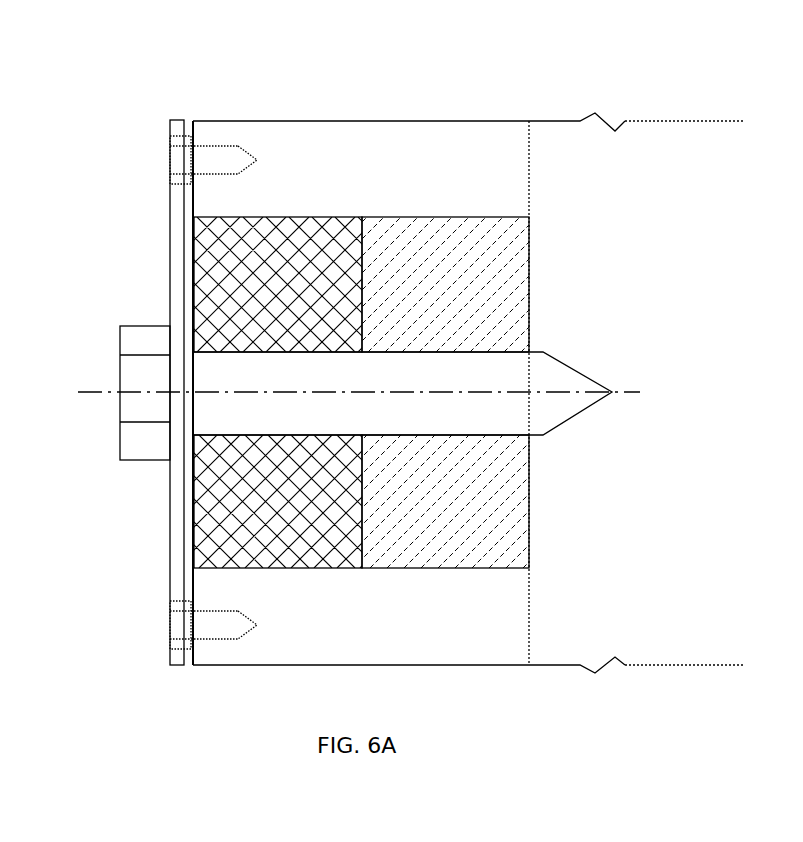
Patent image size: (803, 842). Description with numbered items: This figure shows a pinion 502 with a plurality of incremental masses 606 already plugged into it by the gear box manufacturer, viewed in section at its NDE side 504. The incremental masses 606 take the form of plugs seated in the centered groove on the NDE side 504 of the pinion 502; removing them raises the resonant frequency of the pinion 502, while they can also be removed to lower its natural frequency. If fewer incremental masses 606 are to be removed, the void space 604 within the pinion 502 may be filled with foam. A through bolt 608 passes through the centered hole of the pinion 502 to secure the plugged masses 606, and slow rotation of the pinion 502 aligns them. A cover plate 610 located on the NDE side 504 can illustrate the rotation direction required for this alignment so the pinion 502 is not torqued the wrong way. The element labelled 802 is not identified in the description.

The pinion 502 is at (112, 62).
The NDE side 504 is at (130, 225).
The void space 604 is at (205, 280).
The incremental masses 606 is at (515, 281).
The through bolt 608 is at (120, 434).
The cover plate 610 is at (170, 128).
The conductor shaft 802 is at (527, 417).